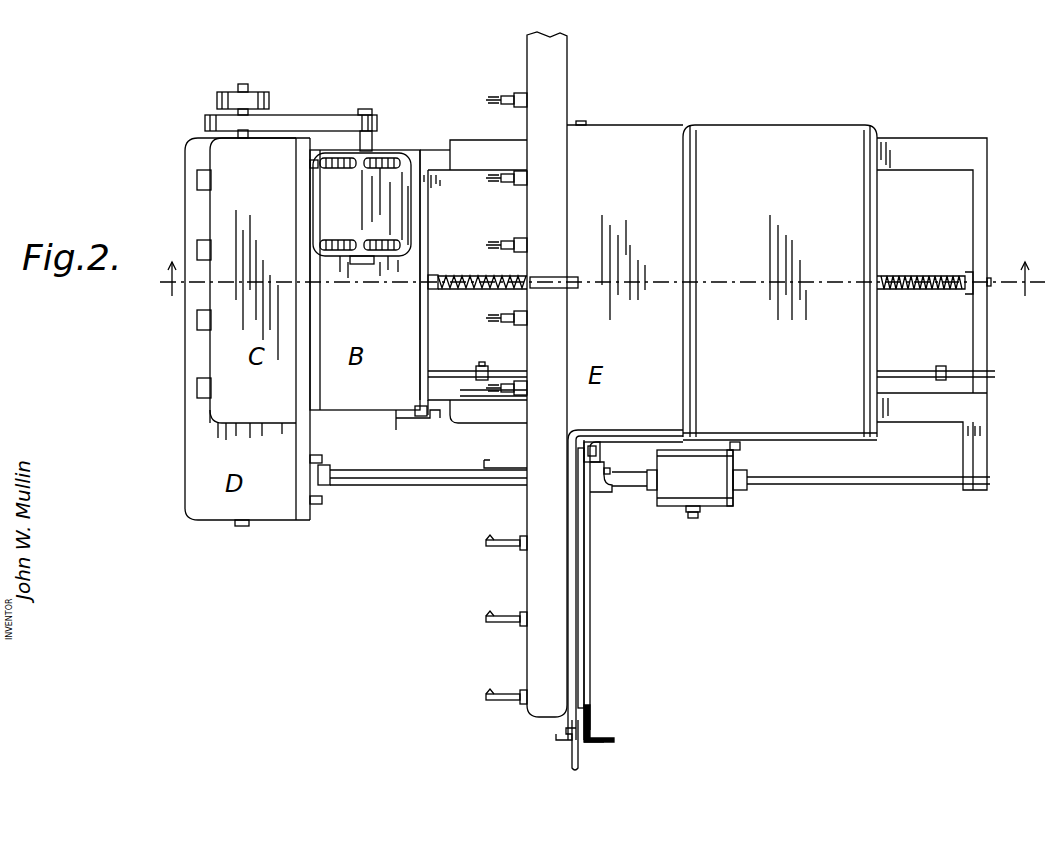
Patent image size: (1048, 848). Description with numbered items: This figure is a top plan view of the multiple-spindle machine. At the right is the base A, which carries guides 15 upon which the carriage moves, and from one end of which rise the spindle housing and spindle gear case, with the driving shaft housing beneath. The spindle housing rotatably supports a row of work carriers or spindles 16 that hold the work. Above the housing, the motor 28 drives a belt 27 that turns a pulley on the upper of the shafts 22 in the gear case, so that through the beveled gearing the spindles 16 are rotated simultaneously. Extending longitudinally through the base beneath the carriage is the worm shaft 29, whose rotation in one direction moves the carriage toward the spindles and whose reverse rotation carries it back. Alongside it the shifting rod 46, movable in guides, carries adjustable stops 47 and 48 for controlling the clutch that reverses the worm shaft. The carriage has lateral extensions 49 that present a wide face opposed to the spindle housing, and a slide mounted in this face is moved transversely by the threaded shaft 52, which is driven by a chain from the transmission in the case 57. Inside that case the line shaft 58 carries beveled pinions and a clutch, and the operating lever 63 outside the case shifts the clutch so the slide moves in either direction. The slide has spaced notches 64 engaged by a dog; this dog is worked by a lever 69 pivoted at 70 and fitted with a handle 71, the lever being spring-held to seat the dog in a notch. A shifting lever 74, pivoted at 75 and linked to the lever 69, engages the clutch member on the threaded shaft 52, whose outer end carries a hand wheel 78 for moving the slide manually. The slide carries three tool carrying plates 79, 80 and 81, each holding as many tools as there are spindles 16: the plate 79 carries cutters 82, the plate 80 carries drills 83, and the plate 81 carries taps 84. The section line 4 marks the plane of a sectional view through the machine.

The section line 4- 4 is at (593, 284).
The guides 15 is at (476, 148).
The work carriers or spindles 16 is at (197, 383).
The shafts 22 is at (246, 90).
The belt 27 is at (336, 114).
The motor 28 is at (362, 215).
The worm shaft 29 is at (940, 274).
The shifting rod 46 is at (462, 380).
The stop 47 is at (478, 365).
The stop 48 is at (938, 366).
The lateral extensions 49 is at (572, 78).
The threaded shaft 52 is at (593, 665).
The case 57 is at (725, 508).
The line shaft 58 is at (836, 484).
The operating lever 63 is at (690, 516).
The notches 64 is at (548, 276).
The lever 69 is at (556, 740).
The pivot 70 is at (586, 520).
The handle 71 is at (580, 758).
The shifting lever 74 is at (598, 456).
The pivot 75 is at (612, 492).
The hand wheel 78 is at (602, 738).
The tool carrying plate 79 is at (518, 587).
The tool carrying plate 80 is at (520, 350).
The tool carrying plate 81 is at (517, 58).
The cutters 82 is at (492, 624).
The drills 83 is at (496, 242).
The taps 84 is at (500, 98).
The base A is at (976, 413).